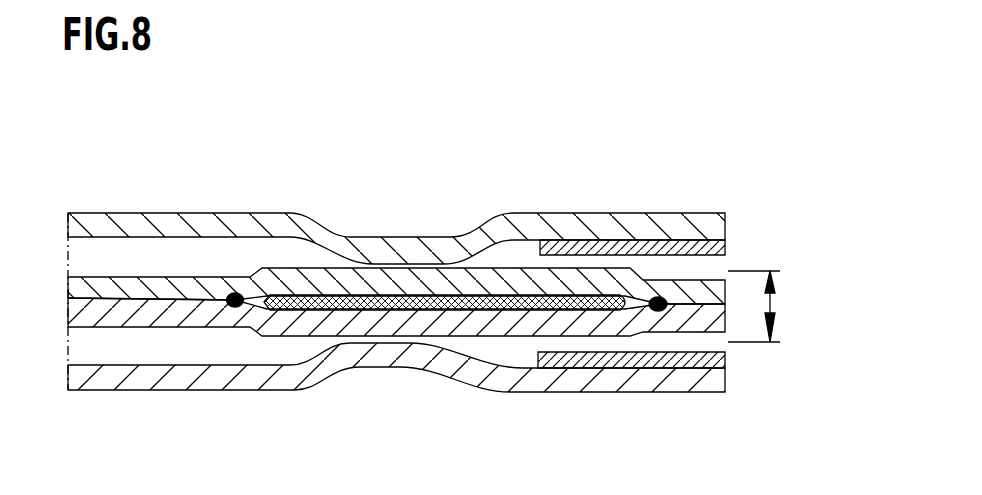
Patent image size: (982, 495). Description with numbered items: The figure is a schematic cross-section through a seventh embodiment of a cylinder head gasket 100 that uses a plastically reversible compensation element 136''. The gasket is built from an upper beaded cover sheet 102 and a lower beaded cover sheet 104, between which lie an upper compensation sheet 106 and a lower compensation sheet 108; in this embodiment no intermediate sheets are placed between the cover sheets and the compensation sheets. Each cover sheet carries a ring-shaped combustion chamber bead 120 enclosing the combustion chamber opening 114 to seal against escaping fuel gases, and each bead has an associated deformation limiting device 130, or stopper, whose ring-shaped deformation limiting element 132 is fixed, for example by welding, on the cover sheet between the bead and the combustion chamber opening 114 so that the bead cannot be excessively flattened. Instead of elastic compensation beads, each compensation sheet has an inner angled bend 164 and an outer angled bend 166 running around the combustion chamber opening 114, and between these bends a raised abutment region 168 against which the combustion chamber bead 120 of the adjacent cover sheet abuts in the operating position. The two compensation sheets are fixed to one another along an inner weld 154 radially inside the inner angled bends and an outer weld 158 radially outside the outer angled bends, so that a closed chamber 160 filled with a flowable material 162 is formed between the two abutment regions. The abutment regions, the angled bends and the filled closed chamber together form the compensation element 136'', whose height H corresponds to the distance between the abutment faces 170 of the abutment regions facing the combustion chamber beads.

The cylinder head gasket 100 is at (98, 178).
The upper beaded cover sheet 102 is at (78, 222).
The lower beaded cover sheet 104 is at (101, 369).
The upper compensation sheet 106 is at (163, 292).
The lower compensation sheet 108 is at (177, 312).
The combustion chamber opening 114 is at (791, 306).
The combustion chamber bead 120 is at (336, 203).
The deformation limiting device 130 is at (718, 190).
The deformation limiting element 132 is at (630, 253).
The plastically reversible compensation element 136'' is at (586, 193).
The inner weld 154 is at (665, 298).
The outer weld 158 is at (230, 293).
The closed chamber 160 is at (350, 292).
The flowable material 162 is at (473, 295).
The inner angled bend 164 is at (640, 267).
The outer angled bend 166 is at (258, 270).
The abutment region 168 is at (504, 226).
The abutment face 170 is at (410, 295).
The height of the compensation element H is at (794, 303).